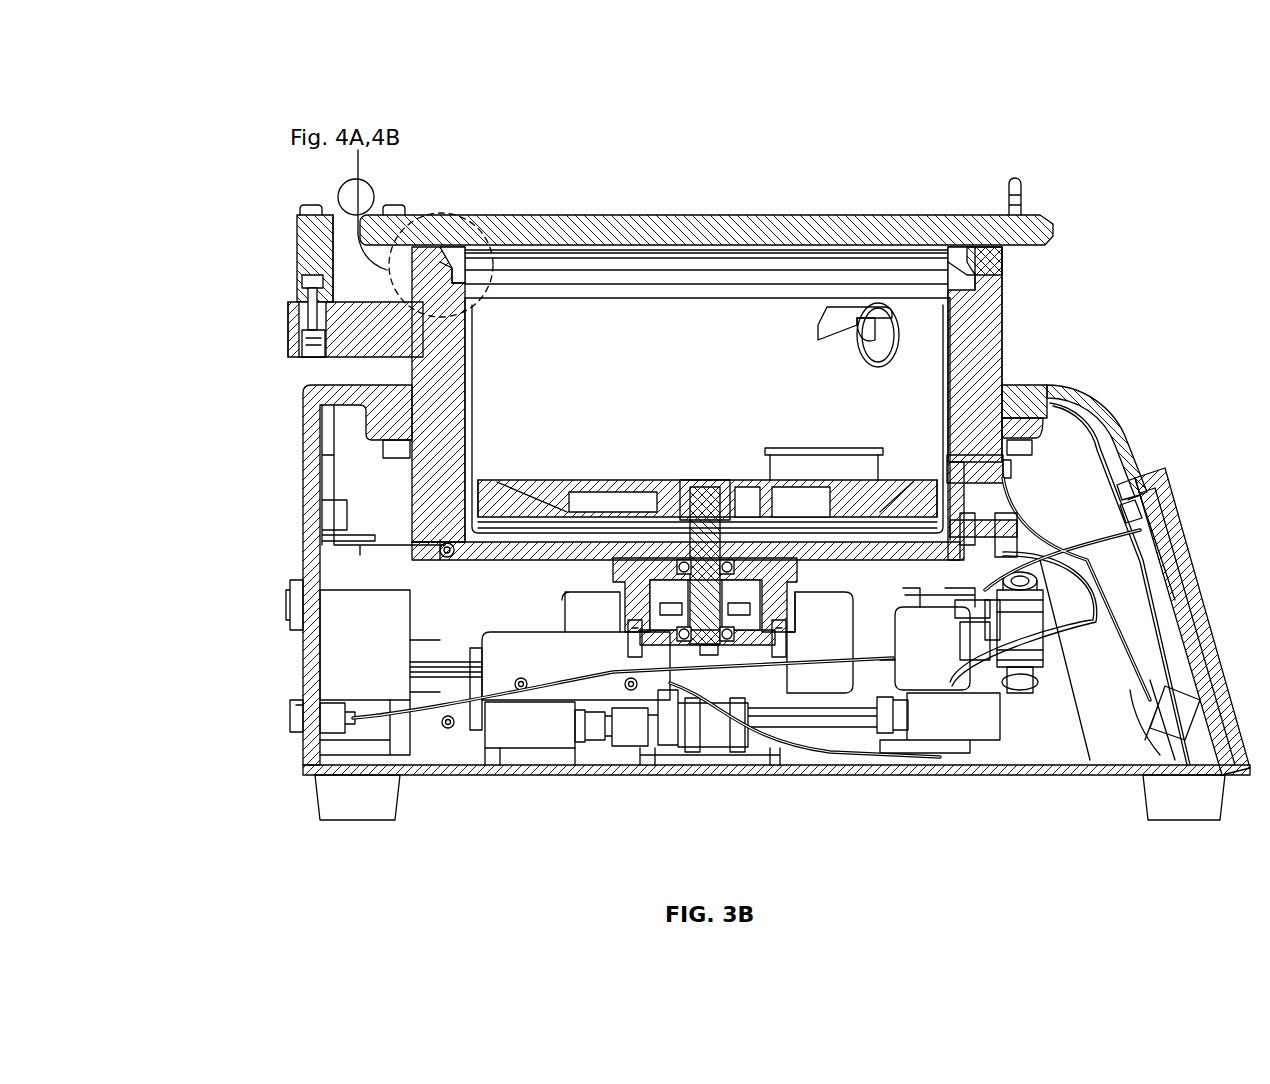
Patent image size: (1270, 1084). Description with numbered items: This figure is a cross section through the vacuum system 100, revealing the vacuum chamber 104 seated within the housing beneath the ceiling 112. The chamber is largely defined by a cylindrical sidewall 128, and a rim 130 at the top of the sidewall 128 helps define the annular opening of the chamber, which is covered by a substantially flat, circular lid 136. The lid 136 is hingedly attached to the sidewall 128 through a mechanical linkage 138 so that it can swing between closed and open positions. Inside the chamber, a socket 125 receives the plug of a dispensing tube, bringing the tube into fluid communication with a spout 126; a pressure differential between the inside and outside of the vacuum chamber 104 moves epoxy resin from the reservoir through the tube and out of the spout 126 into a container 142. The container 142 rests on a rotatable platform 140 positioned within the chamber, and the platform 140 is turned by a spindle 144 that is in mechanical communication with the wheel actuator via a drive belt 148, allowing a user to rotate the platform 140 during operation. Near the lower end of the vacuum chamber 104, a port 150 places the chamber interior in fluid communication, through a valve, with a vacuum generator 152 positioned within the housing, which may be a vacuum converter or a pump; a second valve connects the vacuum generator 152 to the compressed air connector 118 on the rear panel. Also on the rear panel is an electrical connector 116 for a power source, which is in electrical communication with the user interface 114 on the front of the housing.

The vacuum system 100 is at (252, 110).
The vacuum chamber 104 is at (877, 202).
The ceiling 112 is at (1062, 386).
The user interface 114 is at (1157, 490).
The electrical connector 116 is at (270, 615).
The compressed air connector 118 is at (270, 722).
The socket 125 is at (865, 370).
The spout 126 is at (832, 322).
The sidewall 128 is at (980, 345).
The rim 130 is at (990, 260).
The lid 136 is at (698, 226).
The mechanical linkage 138 is at (268, 262).
The rotatable platform 140 is at (557, 478).
The container 142 is at (872, 456).
The spindle 144 is at (712, 486).
The drive belt 148 is at (668, 610).
The port 150 is at (1107, 438).
The vacuum generator 152 is at (1015, 687).